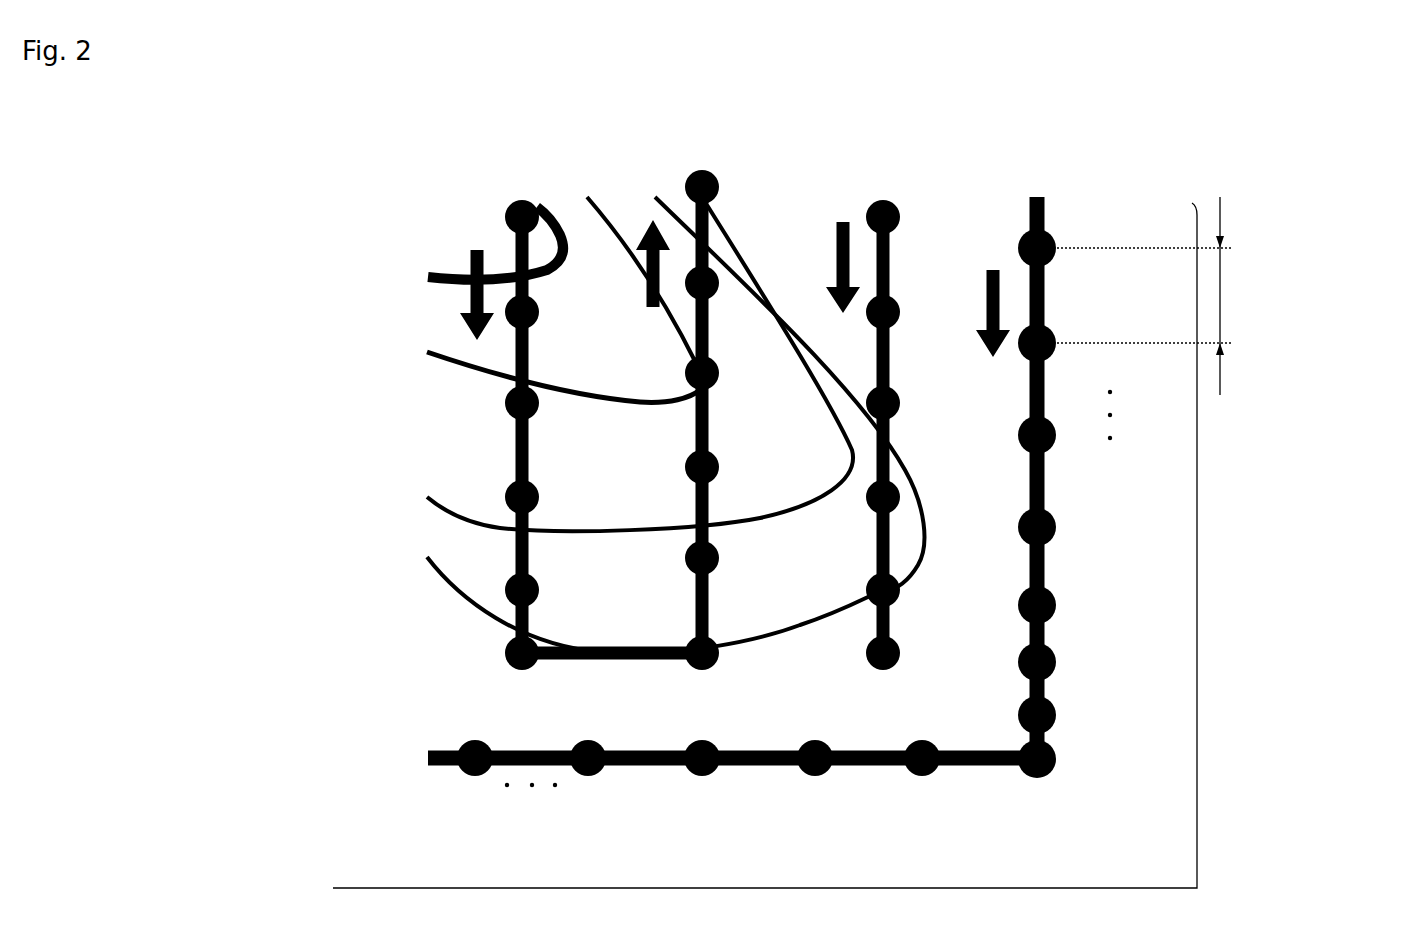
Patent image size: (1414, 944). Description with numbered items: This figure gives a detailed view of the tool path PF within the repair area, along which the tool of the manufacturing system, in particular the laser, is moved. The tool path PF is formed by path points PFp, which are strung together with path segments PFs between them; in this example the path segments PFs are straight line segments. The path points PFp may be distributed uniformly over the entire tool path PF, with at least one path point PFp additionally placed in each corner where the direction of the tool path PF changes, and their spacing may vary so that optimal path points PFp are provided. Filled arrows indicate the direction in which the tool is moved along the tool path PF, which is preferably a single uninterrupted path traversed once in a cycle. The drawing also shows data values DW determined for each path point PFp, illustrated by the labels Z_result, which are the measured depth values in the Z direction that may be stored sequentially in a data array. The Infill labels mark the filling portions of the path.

The tool path PF is at (512, 442).
The path points PFp is at (443, 273).
The path segments PFs is at (517, 348).
The infill tool paths Infill is at (881, 182).
The data values DW is at (1058, 525).